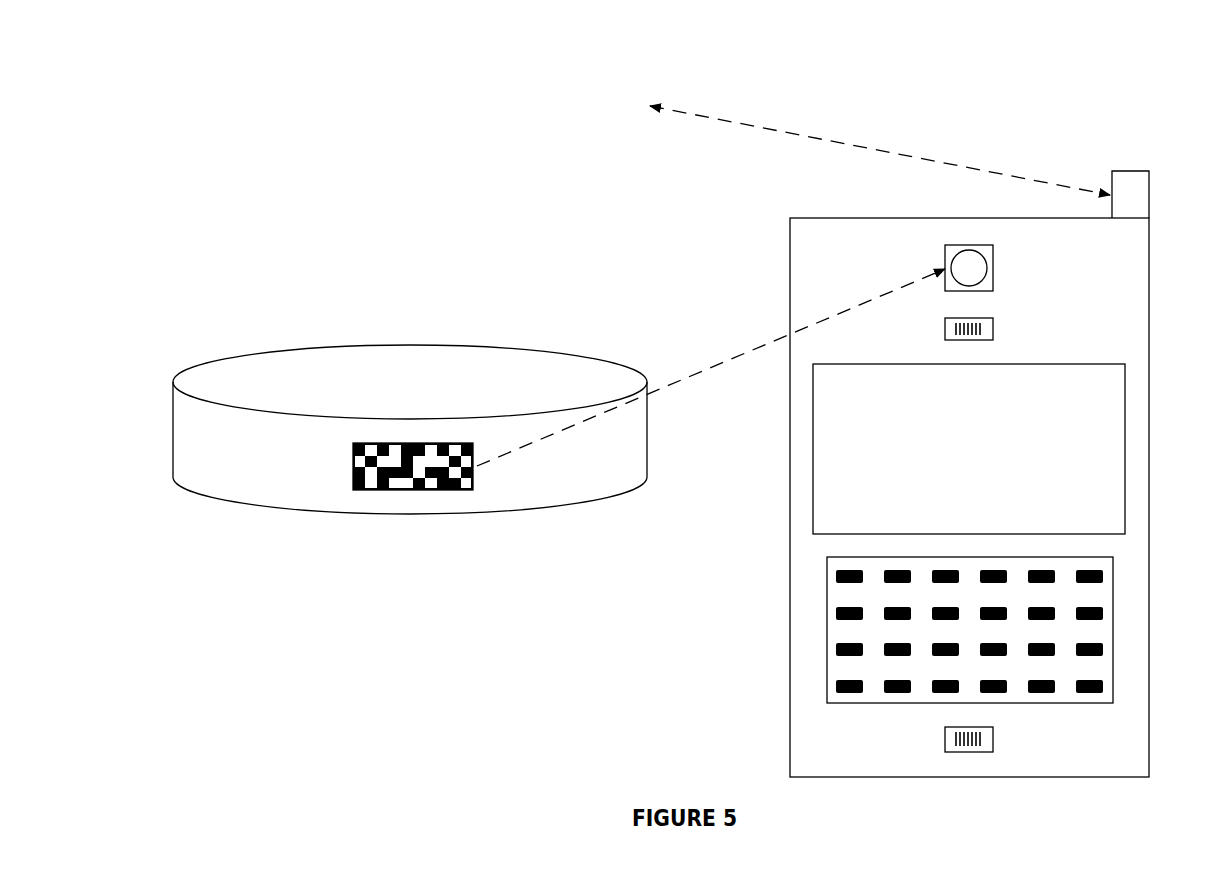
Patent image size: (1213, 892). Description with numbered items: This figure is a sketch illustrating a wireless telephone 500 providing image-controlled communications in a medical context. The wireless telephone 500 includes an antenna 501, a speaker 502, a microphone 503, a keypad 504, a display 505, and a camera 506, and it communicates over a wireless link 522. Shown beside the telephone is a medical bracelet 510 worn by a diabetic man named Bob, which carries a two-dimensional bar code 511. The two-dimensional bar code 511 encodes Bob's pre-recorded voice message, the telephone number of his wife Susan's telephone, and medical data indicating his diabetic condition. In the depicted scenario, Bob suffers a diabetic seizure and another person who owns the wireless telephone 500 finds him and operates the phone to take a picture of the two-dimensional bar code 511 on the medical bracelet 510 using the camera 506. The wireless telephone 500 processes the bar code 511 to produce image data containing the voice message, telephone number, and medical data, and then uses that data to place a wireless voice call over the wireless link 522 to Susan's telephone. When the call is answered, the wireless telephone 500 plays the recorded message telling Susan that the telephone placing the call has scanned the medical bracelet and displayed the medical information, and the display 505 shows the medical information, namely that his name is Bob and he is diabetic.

The wireless telephone 500 is at (1127, 110).
The antenna 501 is at (1143, 171).
The speaker 502 is at (993, 330).
The microphone 503 is at (993, 738).
The keypad 504 is at (887, 704).
The display 505 is at (1107, 364).
The camera 506 is at (993, 264).
The medical bracelet 510 is at (275, 508).
The two-dimensional bar code 511 is at (353, 468).
The wireless link 522 is at (783, 131).